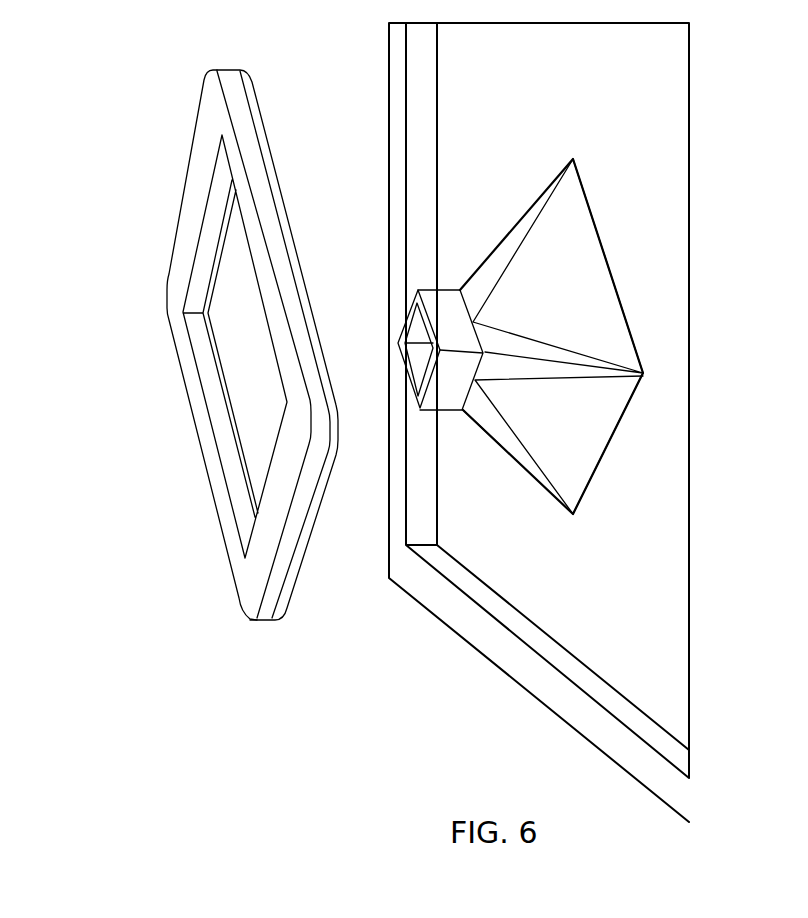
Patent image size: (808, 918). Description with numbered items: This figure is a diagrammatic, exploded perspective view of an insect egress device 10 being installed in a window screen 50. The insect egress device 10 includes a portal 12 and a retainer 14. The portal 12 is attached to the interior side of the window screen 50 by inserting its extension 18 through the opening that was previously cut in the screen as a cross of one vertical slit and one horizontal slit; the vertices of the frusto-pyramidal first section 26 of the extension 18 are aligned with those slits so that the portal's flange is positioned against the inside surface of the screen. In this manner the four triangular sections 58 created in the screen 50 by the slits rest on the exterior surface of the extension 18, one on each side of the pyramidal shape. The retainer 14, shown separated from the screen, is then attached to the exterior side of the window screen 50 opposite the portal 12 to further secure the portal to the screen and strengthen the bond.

The insect egress device 10 is at (265, 708).
The portal 12 is at (517, 458).
The retainer 14 is at (222, 533).
The extension 18 is at (478, 266).
The first section 26 is at (488, 434).
The window screen 50 is at (667, 238).
The triangular sections 58 is at (597, 413).